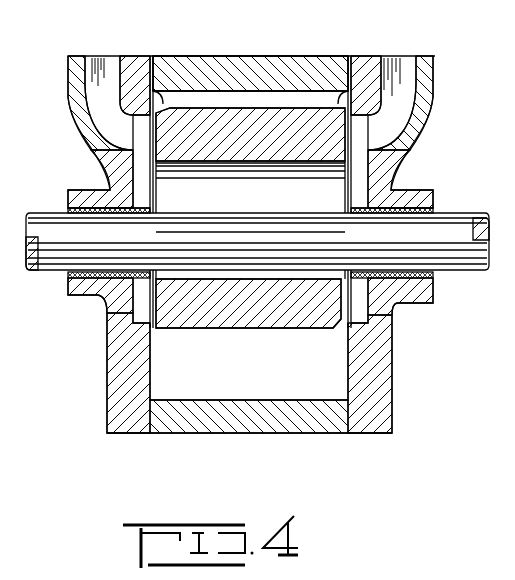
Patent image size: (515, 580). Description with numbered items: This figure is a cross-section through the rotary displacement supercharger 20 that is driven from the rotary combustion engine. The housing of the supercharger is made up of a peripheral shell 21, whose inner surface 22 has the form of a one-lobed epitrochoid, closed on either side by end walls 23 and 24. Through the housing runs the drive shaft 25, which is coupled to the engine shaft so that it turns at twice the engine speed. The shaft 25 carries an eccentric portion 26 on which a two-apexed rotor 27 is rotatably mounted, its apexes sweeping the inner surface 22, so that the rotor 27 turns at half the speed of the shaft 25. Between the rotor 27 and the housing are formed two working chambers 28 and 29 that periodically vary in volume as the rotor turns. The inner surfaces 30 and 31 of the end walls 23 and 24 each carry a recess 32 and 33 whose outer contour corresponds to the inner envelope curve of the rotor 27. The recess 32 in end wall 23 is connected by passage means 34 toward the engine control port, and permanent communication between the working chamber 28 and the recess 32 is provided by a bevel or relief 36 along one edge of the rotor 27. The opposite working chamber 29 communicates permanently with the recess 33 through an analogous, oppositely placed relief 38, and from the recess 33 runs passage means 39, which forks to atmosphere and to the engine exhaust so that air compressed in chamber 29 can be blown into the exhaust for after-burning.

The rotary displacement supercharger 20 is at (304, 52).
The peripheral shell 21 is at (250, 67).
The inner surface 22 is at (282, 402).
The end wall 23 is at (121, 403).
The end wall 24 is at (385, 395).
The drive shaft 25 is at (53, 216).
The eccentric portion 26 is at (264, 211).
The two-apexed rotor 27 is at (186, 318).
The working chamber 28 is at (203, 97).
The working chamber 29 is at (259, 381).
The inner surface 30 is at (157, 362).
The inner surface 31 is at (346, 362).
The recess 32 is at (137, 306).
The recess 33 is at (364, 313).
The passage means 34 is at (100, 63).
The bevel or relief 36 is at (150, 78).
The bevel or relief 38 is at (335, 322).
The passage means 39 is at (398, 70).